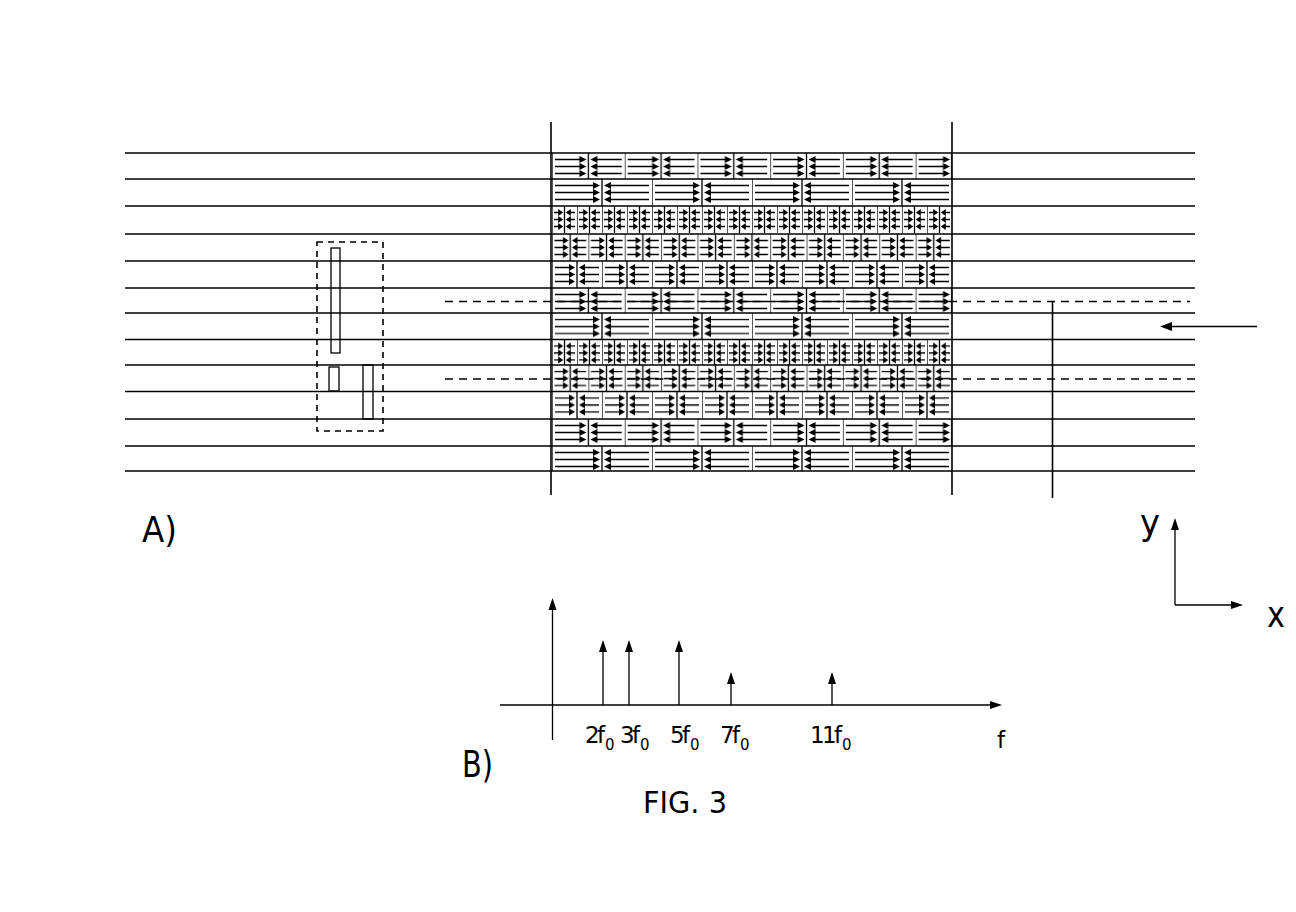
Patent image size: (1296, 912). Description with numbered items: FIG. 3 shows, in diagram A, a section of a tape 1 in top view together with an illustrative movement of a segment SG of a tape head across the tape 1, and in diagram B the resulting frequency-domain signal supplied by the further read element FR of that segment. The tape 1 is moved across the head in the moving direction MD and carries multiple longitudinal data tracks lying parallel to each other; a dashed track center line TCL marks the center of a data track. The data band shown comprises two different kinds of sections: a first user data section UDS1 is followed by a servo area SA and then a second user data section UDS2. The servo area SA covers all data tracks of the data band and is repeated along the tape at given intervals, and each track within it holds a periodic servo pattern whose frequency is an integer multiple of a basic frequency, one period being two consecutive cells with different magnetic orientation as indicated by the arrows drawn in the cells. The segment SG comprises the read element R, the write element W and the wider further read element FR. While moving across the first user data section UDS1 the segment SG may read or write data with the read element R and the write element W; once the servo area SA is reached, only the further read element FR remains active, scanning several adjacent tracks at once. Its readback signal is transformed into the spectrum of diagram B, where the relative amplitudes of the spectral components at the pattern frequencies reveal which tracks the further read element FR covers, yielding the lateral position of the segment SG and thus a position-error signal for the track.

The tape 1 is at (876, 145).
The servo area SA is at (751, 298).
The first user data section UDS1 is at (230, 257).
The second user data section UDS2 is at (1095, 129).
The segment SG is at (383, 252).
The further read element FR is at (343, 272).
The read element R is at (337, 383).
The write element W is at (372, 392).
The track center line TCL is at (1001, 379).
The moving direction MD is at (1215, 305).